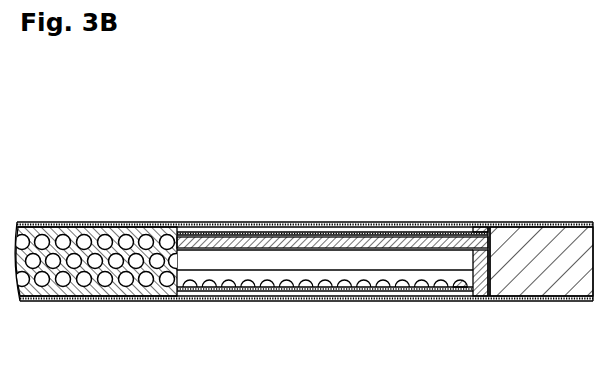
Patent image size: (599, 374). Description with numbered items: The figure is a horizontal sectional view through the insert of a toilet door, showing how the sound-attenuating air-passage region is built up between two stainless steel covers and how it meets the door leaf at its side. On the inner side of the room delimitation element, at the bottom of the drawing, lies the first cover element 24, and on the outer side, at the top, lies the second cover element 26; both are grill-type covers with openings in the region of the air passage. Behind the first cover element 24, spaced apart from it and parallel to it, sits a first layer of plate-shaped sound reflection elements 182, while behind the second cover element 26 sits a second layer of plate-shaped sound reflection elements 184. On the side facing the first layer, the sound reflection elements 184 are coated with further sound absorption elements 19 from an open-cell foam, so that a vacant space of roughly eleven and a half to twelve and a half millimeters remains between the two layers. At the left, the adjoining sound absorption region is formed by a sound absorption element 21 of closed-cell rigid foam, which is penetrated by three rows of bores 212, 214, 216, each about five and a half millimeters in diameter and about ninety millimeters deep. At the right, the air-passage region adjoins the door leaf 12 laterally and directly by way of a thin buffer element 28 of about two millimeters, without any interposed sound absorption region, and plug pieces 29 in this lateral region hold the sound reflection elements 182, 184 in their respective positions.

The door leaf 12 is at (551, 237).
The further sound absorption elements 19 is at (398, 237).
The sound absorption element 21 is at (157, 222).
The first cover element 24 is at (445, 301).
The second cover element 26 is at (442, 222).
The buffer element 28 is at (488, 227).
The plug pieces 29 is at (478, 297).
The sound reflection elements 182 is at (330, 291).
The sound reflection elements 184 is at (330, 237).
The bores 212 is at (42, 279).
The bores 214 is at (96, 261).
The bores 216 is at (42, 242).